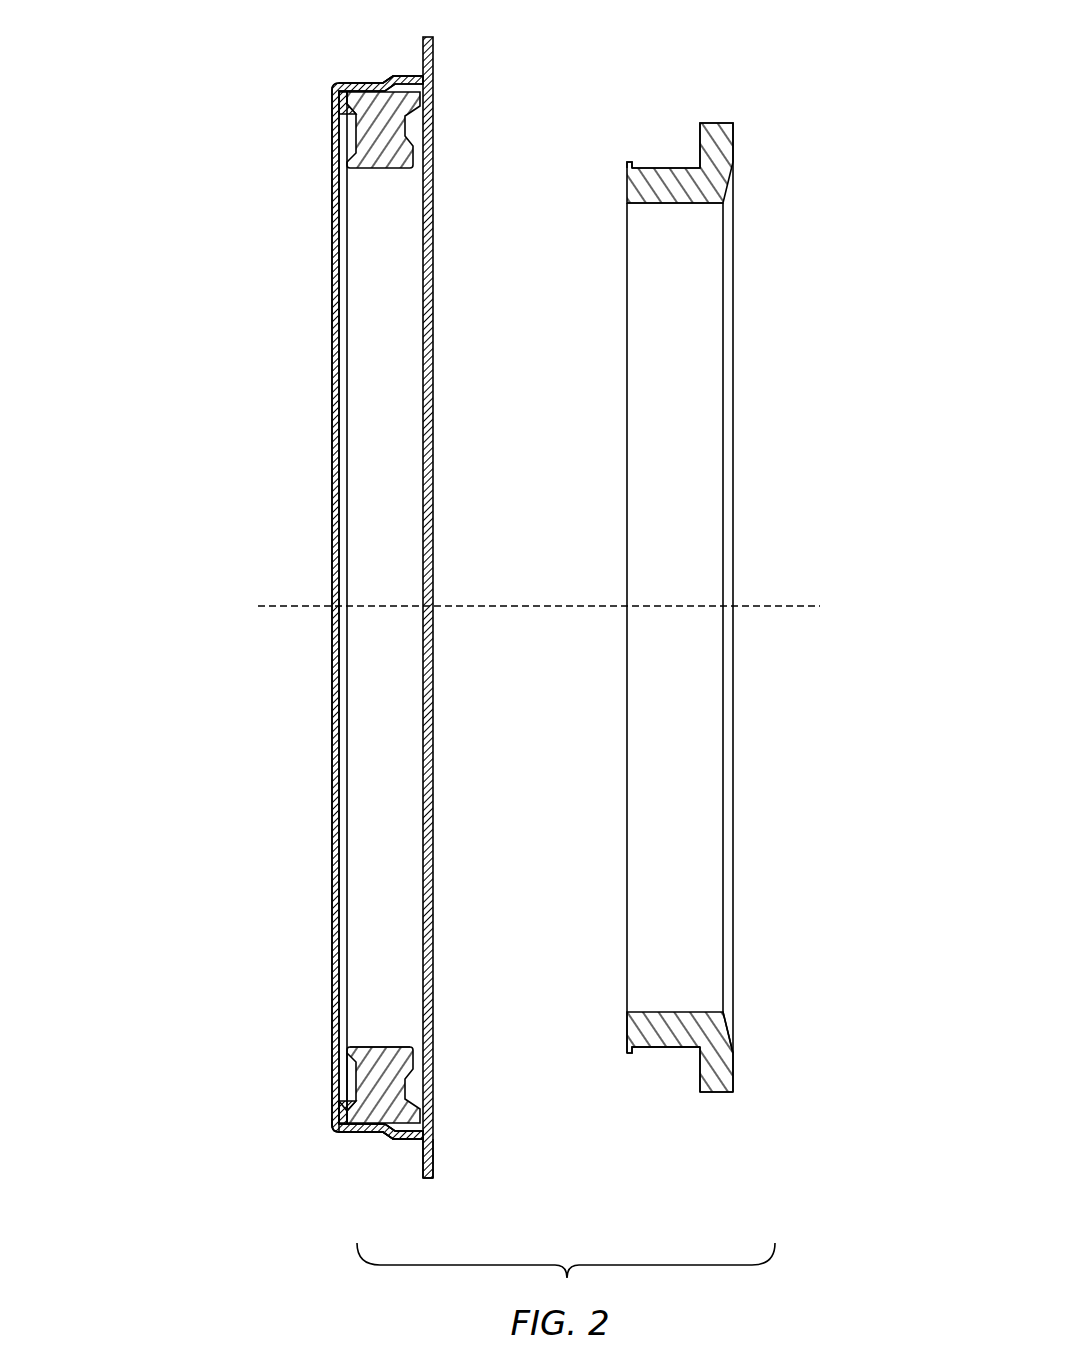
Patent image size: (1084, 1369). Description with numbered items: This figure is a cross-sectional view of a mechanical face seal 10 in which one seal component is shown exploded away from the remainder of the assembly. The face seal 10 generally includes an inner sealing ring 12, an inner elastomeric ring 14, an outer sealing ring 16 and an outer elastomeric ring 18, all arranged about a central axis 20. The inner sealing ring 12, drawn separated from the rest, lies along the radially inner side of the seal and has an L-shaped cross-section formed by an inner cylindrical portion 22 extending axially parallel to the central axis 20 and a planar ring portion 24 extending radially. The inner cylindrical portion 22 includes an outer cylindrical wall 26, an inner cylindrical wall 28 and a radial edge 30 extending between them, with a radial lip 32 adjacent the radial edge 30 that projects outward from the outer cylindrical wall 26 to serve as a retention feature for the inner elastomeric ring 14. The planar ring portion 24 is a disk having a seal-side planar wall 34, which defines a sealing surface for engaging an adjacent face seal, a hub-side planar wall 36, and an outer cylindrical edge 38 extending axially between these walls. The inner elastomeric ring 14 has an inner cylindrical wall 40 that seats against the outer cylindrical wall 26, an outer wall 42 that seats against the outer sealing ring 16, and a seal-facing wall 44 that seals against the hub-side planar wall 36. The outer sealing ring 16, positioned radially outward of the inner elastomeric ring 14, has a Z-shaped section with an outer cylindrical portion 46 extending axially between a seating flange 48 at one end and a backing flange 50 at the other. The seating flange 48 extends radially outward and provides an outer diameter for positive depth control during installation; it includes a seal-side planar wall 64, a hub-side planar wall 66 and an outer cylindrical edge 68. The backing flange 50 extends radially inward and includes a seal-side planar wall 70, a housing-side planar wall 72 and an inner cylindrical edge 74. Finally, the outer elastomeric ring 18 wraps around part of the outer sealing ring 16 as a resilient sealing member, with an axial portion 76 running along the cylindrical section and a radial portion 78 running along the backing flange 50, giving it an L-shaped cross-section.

The mechanical face seal 10 is at (185, 60).
The inner sealing ring 12 is at (788, 88).
The inner elastomeric ring 14 is at (417, 130).
The outer sealing ring 16 is at (401, 1143).
The outer elastomeric ring 18 is at (330, 86).
The central axis 20 is at (780, 606).
The inner cylindrical portion 22 is at (652, 177).
The planar ring portion 24 is at (712, 148).
The outer cylindrical wall 26 is at (662, 1050).
The inner cylindrical wall 28 is at (675, 1013).
The radial edge 30 is at (627, 1032).
The radial lip 32 is at (628, 164).
The seal-side planar wall 34 is at (734, 1076).
The hub-side planar wall 36 is at (699, 1072).
The outer cylindrical edge 38 is at (714, 1094).
The inner cylindrical wall 40 is at (385, 1047).
The outer wall 42 is at (380, 1112).
The seal-facing wall 44 is at (414, 1062).
The outer cylindrical portion 46 is at (400, 78).
The seating flange 48 is at (437, 64).
The backing flange 50 is at (341, 102).
The seal-side planar wall 64 is at (434, 1162).
The hub-side planar wall 66 is at (421, 1163).
The outer cylindrical edge 68 is at (430, 1182).
The seal-side planar wall 70 is at (351, 1099).
The housing-side planar wall 72 is at (340, 1119).
The inner cylindrical edge 74 is at (345, 1101).
The axial portion 76 is at (350, 1136).
The radial portion 78 is at (340, 1108).